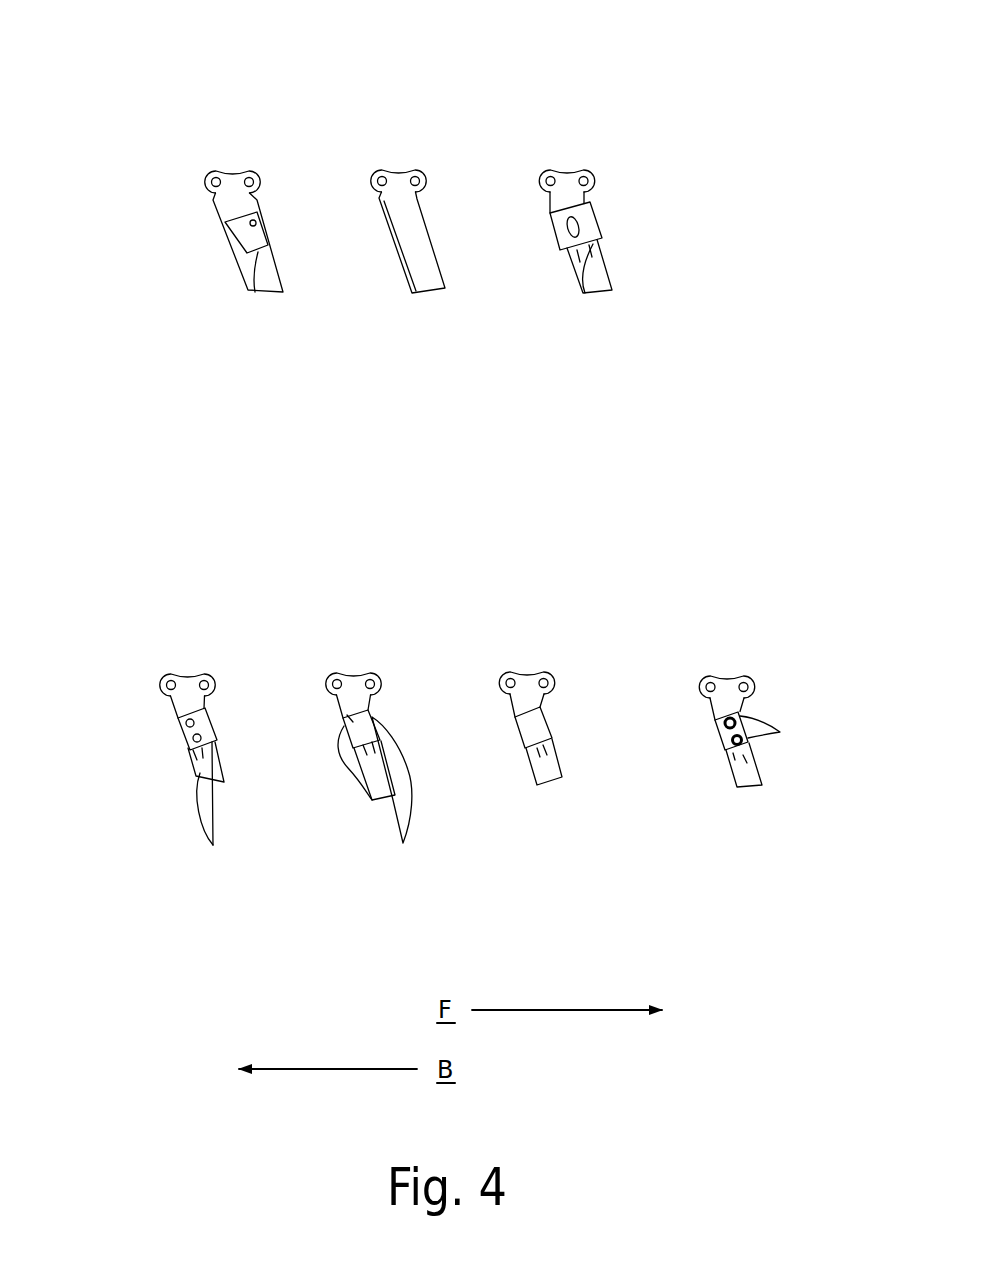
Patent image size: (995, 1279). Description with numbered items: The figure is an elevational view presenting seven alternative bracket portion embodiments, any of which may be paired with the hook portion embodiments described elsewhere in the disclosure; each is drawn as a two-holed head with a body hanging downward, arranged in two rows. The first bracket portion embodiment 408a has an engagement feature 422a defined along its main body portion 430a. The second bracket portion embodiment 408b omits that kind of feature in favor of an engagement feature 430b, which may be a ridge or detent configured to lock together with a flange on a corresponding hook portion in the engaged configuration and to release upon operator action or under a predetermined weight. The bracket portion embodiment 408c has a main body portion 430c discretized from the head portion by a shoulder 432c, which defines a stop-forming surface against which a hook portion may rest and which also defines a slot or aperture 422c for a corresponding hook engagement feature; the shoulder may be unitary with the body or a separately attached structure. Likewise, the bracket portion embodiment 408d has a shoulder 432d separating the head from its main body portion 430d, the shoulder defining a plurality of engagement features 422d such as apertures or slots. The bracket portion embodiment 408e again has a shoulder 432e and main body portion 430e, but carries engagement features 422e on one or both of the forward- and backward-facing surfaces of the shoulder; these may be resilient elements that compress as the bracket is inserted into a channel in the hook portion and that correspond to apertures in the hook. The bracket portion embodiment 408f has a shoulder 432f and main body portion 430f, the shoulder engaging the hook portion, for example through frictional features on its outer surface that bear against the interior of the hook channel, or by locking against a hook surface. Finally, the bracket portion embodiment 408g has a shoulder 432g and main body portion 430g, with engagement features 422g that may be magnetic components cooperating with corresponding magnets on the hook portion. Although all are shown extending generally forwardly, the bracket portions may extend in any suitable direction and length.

The bracket portion embodiment 408a is at (200, 186).
The bracket portion embodiment 408b is at (357, 148).
The bracket portion embodiment 408c is at (592, 187).
The bracket portion embodiment 408d is at (139, 696).
The bracket portion embodiment 408e is at (333, 701).
The bracket portion embodiment 408f is at (479, 699).
The bracket portion embodiment 408g is at (728, 699).
The main body portion 430a is at (228, 242).
The engagement feature 430b is at (388, 231).
The main body portion 430c is at (607, 272).
The main body portion 430d is at (190, 764).
The main body portion 430e is at (362, 775).
The main body portion 430f is at (533, 777).
The main body portion 430g is at (747, 787).
The shoulder 432c is at (600, 215).
The shoulder 432d is at (178, 726).
The shoulder 432e is at (355, 722).
The shoulder 432f is at (530, 730).
The shoulder 432g is at (718, 738).
The engagement feature 422a is at (255, 292).
The slot or aperture 422c is at (585, 293).
The engagement features 422d is at (210, 812).
The engagement features 422e is at (410, 800).
The engagement features 422g is at (781, 732).